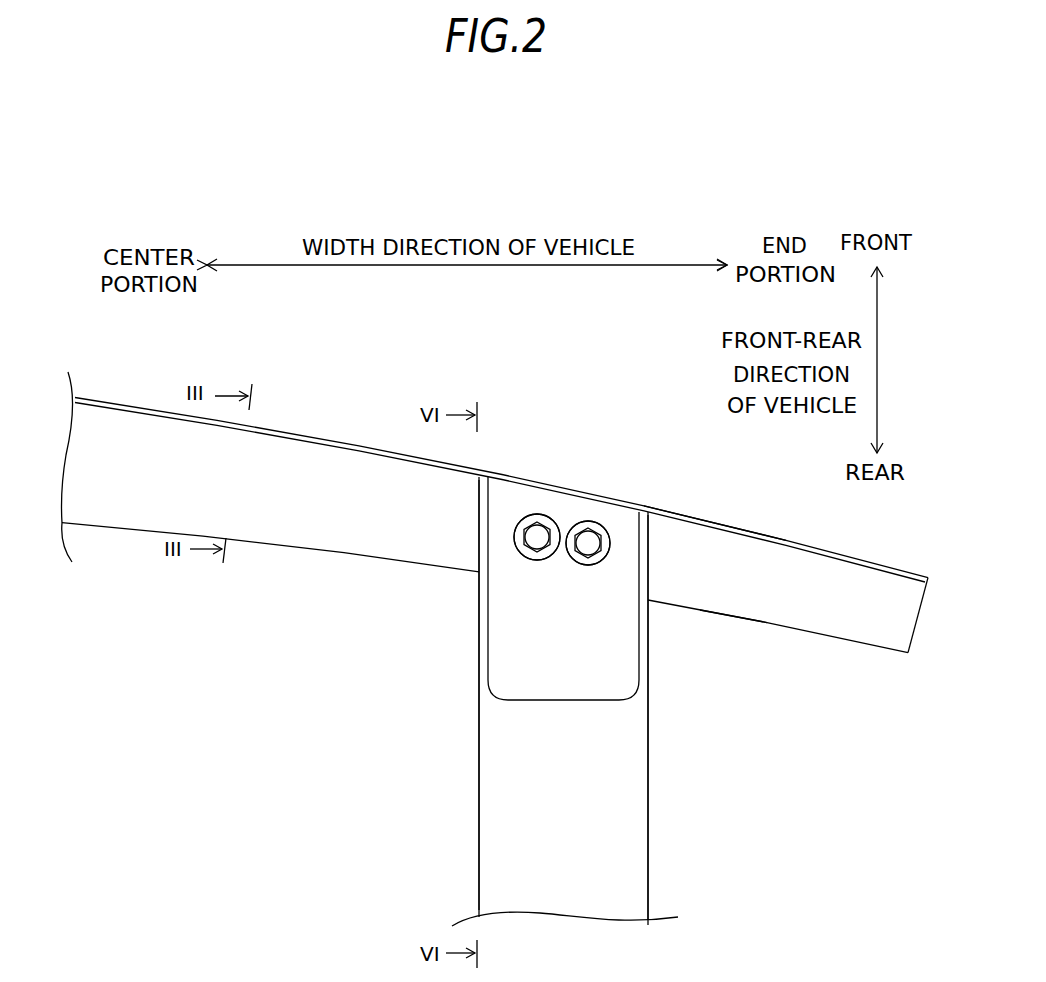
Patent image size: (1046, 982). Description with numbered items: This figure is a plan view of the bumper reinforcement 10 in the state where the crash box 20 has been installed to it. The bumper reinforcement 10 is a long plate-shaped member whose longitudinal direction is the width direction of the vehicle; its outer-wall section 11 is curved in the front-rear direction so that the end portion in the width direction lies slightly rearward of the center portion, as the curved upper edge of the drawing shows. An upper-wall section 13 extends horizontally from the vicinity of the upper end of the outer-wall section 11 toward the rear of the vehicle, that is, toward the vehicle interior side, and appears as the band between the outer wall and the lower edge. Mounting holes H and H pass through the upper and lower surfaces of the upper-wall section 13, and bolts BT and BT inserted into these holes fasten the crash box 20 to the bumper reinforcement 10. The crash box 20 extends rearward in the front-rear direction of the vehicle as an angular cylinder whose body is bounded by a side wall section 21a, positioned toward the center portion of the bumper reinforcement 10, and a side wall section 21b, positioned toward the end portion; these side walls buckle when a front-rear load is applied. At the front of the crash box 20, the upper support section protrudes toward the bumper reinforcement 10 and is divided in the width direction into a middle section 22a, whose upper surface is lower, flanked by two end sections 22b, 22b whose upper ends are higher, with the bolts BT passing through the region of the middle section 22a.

The bumper reinforcement 10 is at (820, 548).
The outer-wall section 11 is at (663, 508).
The upper-wall section 13 is at (721, 600).
The crash box 20 is at (650, 798).
The side wall section 21a is at (479, 698).
The side wall section 21b is at (648, 702).
The middle section 22a is at (568, 505).
The end sections 22b is at (479, 517).
The bolts BT is at (543, 514).
The mounting holes H is at (526, 518).